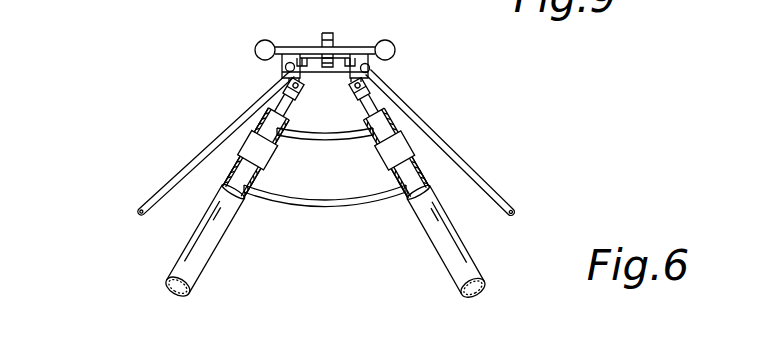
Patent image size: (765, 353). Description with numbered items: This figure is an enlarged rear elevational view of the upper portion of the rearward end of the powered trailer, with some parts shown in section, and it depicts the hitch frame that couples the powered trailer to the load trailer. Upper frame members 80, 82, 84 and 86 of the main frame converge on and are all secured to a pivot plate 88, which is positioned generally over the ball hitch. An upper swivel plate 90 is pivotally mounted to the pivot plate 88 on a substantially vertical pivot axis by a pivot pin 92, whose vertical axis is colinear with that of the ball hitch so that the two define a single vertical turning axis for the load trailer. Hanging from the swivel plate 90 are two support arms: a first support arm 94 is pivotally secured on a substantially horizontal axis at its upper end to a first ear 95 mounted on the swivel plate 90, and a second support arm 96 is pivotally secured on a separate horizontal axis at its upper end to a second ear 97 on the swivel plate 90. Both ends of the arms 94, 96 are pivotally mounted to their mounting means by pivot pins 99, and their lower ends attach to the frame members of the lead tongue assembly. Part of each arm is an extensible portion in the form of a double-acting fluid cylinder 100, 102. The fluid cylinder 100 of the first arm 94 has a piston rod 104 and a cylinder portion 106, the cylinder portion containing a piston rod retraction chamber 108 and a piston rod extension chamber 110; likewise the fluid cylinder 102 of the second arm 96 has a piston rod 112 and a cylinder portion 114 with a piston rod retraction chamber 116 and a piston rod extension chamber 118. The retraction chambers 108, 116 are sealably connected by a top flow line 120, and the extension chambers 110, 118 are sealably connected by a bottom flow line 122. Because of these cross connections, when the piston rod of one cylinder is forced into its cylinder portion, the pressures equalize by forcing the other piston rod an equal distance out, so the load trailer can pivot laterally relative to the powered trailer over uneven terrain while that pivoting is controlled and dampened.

The upper frame member 80 is at (392, 42).
The upper frame member 82 is at (257, 43).
The upper frame member 84 is at (443, 142).
The upper frame member 86 is at (245, 104).
The pivot plate 88 is at (343, 47).
The upper swivel plate 90 is at (302, 52).
The pivot pin 92 is at (327, 33).
The first support arm 94 is at (487, 274).
The first ear 95 is at (372, 68).
The second support arm 96 is at (203, 274).
The second ear 97 is at (283, 67).
The pivot pin 99 is at (368, 83).
The double-acting fluid cylinder 100 is at (433, 173).
The double-acting fluid cylinder 102 is at (222, 178).
The piston rod 104 is at (373, 100).
The cylinder portion 106 is at (405, 176).
The piston rod retraction chamber 108 is at (381, 140).
The piston rod extension chamber 110 is at (405, 189).
The piston rod 112 is at (291, 128).
The cylinder portion 114 is at (258, 138).
The piston rod retraction chamber 116 is at (273, 137).
The piston rod extension chamber 118 is at (244, 194).
The top flow line 120 is at (327, 150).
The bottom flow line 122 is at (317, 207).